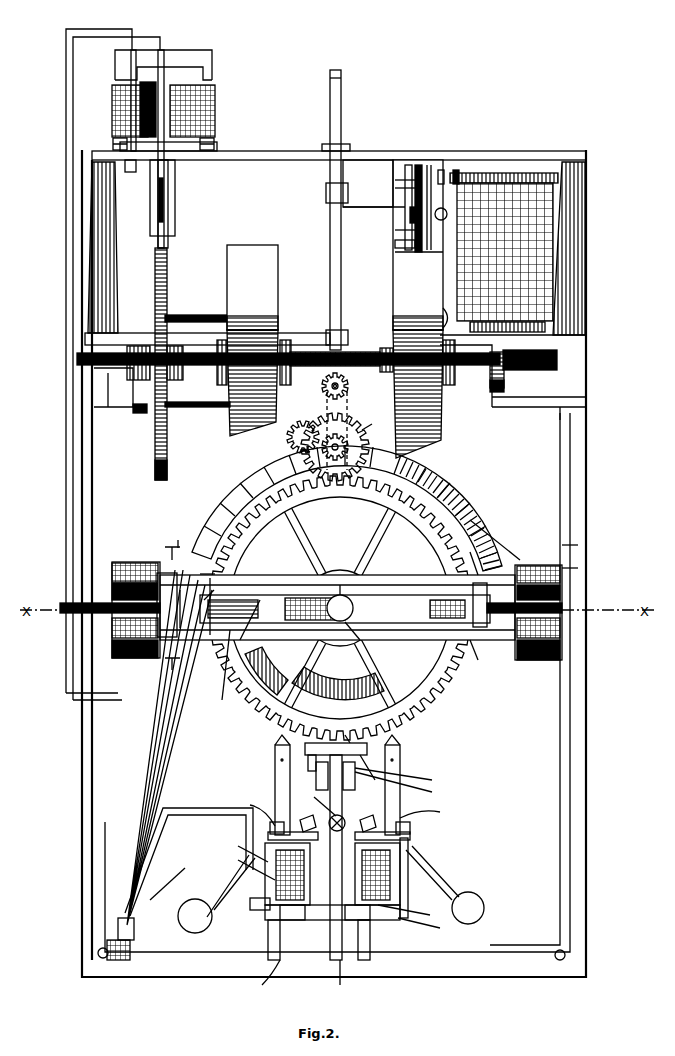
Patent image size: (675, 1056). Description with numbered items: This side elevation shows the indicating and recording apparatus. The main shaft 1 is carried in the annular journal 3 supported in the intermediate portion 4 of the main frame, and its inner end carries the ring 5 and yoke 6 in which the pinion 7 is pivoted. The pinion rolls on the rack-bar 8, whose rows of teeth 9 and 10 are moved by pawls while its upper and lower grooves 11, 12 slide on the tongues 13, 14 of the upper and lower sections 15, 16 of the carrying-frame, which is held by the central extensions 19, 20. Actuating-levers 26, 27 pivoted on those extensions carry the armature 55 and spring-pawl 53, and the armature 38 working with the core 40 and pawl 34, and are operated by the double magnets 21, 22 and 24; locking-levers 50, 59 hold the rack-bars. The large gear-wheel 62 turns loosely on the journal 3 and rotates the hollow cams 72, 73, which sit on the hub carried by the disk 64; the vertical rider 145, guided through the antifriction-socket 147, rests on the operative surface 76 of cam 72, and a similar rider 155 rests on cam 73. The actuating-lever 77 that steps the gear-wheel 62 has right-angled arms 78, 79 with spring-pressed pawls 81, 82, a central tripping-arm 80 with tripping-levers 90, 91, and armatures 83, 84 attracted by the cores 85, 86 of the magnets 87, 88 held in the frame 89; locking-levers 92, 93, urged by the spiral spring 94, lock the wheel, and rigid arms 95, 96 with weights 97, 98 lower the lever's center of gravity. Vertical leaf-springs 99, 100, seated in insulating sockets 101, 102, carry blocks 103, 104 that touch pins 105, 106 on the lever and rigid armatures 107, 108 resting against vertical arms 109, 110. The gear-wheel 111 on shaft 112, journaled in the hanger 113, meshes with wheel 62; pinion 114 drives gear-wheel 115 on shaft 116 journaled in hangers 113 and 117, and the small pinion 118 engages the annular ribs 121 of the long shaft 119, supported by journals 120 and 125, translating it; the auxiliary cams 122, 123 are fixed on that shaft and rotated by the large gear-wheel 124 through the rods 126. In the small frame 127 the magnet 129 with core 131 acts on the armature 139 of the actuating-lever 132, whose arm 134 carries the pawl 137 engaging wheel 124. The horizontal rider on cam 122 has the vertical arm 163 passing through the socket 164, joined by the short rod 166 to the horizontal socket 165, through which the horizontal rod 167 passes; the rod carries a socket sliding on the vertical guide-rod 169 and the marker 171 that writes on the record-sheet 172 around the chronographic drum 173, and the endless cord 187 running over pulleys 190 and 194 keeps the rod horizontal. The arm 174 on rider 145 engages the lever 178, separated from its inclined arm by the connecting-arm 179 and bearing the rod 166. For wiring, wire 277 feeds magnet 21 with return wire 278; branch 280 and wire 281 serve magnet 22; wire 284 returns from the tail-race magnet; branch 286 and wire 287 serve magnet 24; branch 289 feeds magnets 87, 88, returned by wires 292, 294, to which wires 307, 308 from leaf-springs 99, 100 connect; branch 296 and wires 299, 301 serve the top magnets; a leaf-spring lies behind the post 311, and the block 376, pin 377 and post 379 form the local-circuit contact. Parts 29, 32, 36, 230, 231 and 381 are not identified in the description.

The main shaft 1 is at (337, 607).
The annular journal 3 is at (330, 590).
The intermediate portion of the main frame 4 is at (94, 372).
The ring 5 is at (372, 580).
The yoke 6 is at (342, 580).
The pinion 7 is at (392, 598).
The rack-bar 8 is at (288, 600).
The teeth 9 is at (296, 598).
The teeth 10 is at (215, 620).
The upper groove 11 is at (274, 610).
The lower groove 12 is at (372, 625).
The tongue 13 is at (382, 590).
The tongue 14 is at (280, 630).
The upper section of the carrying-frame 15 is at (316, 585).
The lower section of the carrying-frame 16 is at (320, 632).
The upper central extension 19 is at (210, 578).
The lower central extension 20 is at (462, 625).
The double magnet 21 is at (165, 660).
The double magnet 22 is at (130, 562).
The double magnet 24 is at (530, 565).
The actuating-lever 26 is at (182, 575).
The actuating-lever 27 is at (505, 655).
The sleeve 29 is at (492, 650).
The pin 32 is at (470, 650).
The pawl 34 is at (452, 680).
The ratchet 36 is at (460, 560).
The armature 38 is at (500, 520).
The core 40 is at (510, 540).
The locking-lever 50 is at (446, 700).
The spring-pawl 53 is at (228, 660).
The armature 55 is at (200, 575).
The locking-lever 59 is at (240, 640).
The large gear-wheel 62 is at (388, 522).
The disk 64 is at (328, 570).
The hollow cam 72 is at (340, 608).
The hollow cam 73 is at (470, 482).
The operative surface 76 is at (440, 470).
The actuating-lever 77 is at (348, 820).
The right-angled arm 78 is at (275, 778).
The right-angled arm 79 is at (400, 775).
The central tripping-arm 80 is at (355, 776).
The spring-pressed pawl 81 is at (275, 742).
The spring-pressed pawl 82 is at (402, 740).
The armature 83 is at (308, 823).
The armature 84 is at (369, 823).
The core 85 is at (275, 832).
The core 86 is at (400, 832).
The magnet 87 is at (276, 880).
The magnet 88 is at (392, 880).
The frame 89 is at (305, 749).
The tripping-lever 90 is at (316, 780).
The tripping-lever 91 is at (402, 785).
The locking-lever 92 is at (318, 752).
The locking-lever 93 is at (367, 754).
The spiral spring 94 is at (402, 776).
The rigid arm 95 is at (226, 886).
The rigid arm 96 is at (445, 885).
The weight 97 is at (182, 908).
The weight 98 is at (478, 896).
The vertical leaf-spring 99 is at (242, 865).
The vertical leaf-spring 100 is at (416, 913).
The socket 101 is at (310, 920).
The socket 102 is at (388, 945).
The block 103 is at (270, 828).
The block 104 is at (410, 826).
The pin 105 is at (248, 811).
The pin 106 is at (428, 810).
The rigid armature 107 is at (243, 849).
The rigid armature 108 is at (408, 848).
The vertical arm 109 is at (268, 920).
The vertical arm 110 is at (428, 926).
The gear-wheel 111 is at (310, 446).
The shaft 112 is at (378, 422).
The hanger 113 is at (346, 445).
The pinion 114 is at (303, 452).
The gear-wheel 115 is at (303, 425).
The shaft 116 is at (348, 388).
The hanger 117 is at (326, 188).
The small pinion 118 is at (323, 392).
The long shaft 119 is at (77, 359).
The journal 120 is at (504, 383).
The annular ribs 121 is at (300, 345).
The auxiliary cam 122 is at (418, 309).
The auxiliary cam 123 is at (252, 340).
The large gear-wheel 124 is at (190, 268).
The journal 125 is at (133, 380).
The rods 126 is at (198, 320).
The small frame 127 is at (248, 136).
The magnet 129 is at (112, 113).
The core 131 is at (113, 143).
The actuating-lever 132 is at (168, 183).
The right-angled arm 134 is at (168, 206).
The spring-pressed pawl 137 is at (168, 240).
The armature 139 is at (136, 170).
The vertical rider 145 is at (341, 96).
The antifriction-socket 147 is at (350, 146).
The vertical rider 155 is at (341, 78).
The vertical arm 163 is at (398, 180).
The socket 164 is at (410, 215).
The horizontal socket 165 is at (405, 230).
The short rod 166 is at (405, 188).
The horizontal rod 167 is at (405, 244).
The vertical guide-rod 169 is at (429, 165).
The marker 171 is at (458, 170).
The record-sheet 172 is at (540, 205).
The chronographic drum 173 is at (522, 173).
The arm 174 is at (368, 183).
The lever 178 is at (374, 217).
The connecting-arm 179 is at (418, 165).
The endless cord 187 is at (405, 252).
The pulley 190 is at (441, 170).
The pulley 194 is at (446, 170).
The terminal 230 is at (293, 912).
The terminal 231 is at (358, 912).
The wire 277 is at (155, 739).
The wire 278 is at (162, 779).
The branch wire 280 is at (176, 540).
The wire 281 is at (162, 792).
The wire 284 is at (158, 752).
The branch wire 286 is at (578, 545).
The wire 287 is at (160, 766).
The branch wire 289 is at (250, 940).
The wire 292 is at (194, 820).
The wire 294 is at (190, 846).
The branch wire 296 is at (160, 37).
The wire 299 is at (132, 29).
The wire 301 is at (118, 42).
The wire 307 is at (250, 930).
The wire 308 is at (345, 962).
The post 311 is at (578, 568).
The block 376 is at (212, 580).
The pin 377 is at (208, 542).
The post 379 is at (168, 548).
The pin 381 is at (314, 804).